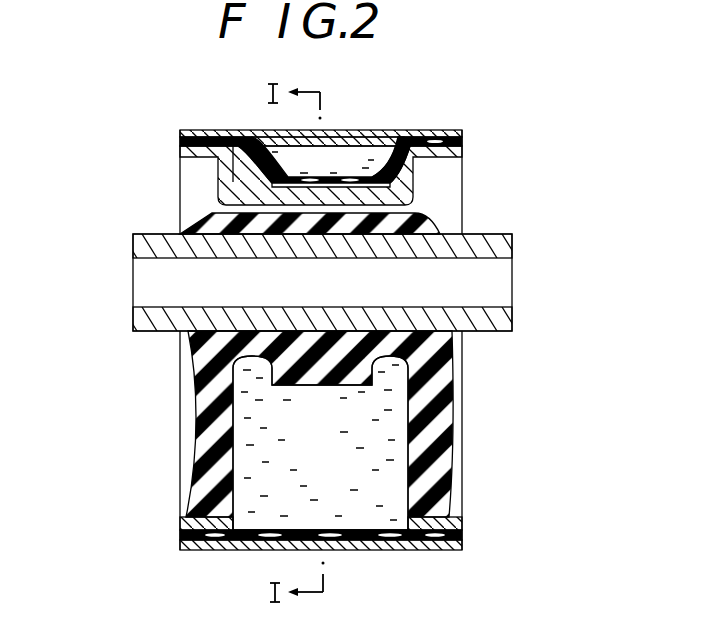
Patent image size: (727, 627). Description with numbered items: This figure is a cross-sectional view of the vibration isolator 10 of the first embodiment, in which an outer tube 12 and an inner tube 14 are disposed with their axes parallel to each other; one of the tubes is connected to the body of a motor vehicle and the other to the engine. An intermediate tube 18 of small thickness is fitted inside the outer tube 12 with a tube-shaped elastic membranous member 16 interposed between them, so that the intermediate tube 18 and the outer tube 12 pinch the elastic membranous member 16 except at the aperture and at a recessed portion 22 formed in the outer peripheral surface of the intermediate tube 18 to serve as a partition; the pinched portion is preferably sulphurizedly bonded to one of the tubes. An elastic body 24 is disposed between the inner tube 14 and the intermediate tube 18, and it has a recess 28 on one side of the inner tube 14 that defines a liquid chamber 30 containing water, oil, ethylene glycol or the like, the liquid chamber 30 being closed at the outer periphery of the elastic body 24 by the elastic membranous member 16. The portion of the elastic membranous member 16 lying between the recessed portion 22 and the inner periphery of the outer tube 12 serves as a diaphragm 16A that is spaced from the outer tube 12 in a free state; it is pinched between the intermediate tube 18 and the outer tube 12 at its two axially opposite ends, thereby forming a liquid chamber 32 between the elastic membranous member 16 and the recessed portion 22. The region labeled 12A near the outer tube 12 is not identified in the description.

The vibration isolator 10 is at (474, 98).
The outer tube 12 is at (181, 130).
The upper portion of diaphragm 12A is at (247, 142).
The inner tube 14 is at (482, 233).
The elastic membranous member 16 is at (385, 551).
The diaphragm 16A is at (324, 130).
The intermediate tube 18 is at (464, 146).
The recessed portion 22 is at (318, 159).
The elastic body 24 is at (440, 368).
The recess 28 is at (303, 386).
The liquid chamber 30 is at (338, 457).
The liquid chamber 32 is at (392, 170).